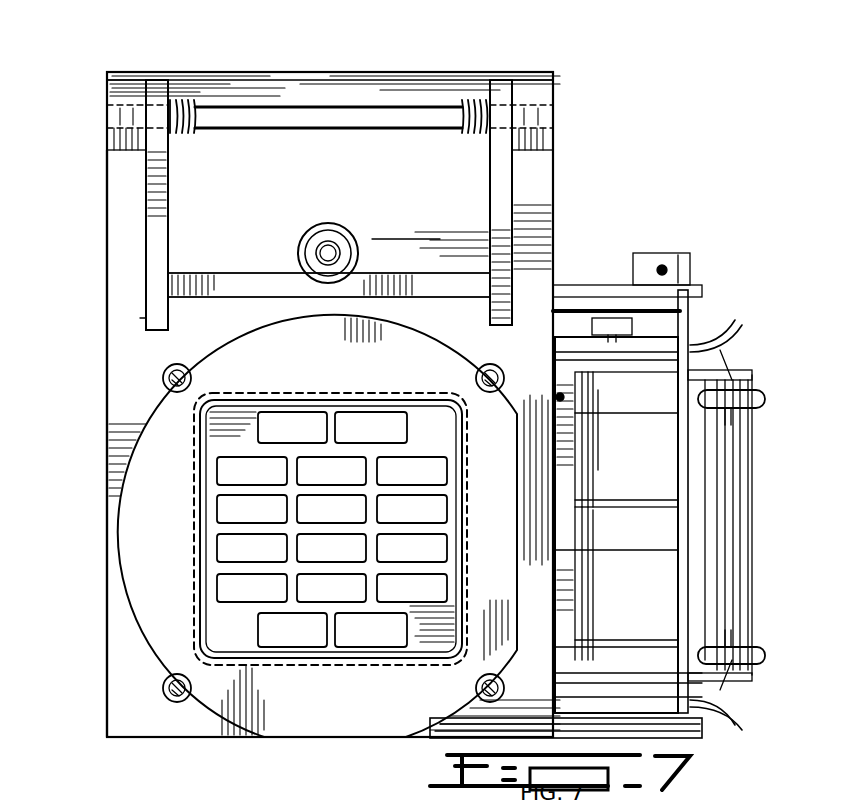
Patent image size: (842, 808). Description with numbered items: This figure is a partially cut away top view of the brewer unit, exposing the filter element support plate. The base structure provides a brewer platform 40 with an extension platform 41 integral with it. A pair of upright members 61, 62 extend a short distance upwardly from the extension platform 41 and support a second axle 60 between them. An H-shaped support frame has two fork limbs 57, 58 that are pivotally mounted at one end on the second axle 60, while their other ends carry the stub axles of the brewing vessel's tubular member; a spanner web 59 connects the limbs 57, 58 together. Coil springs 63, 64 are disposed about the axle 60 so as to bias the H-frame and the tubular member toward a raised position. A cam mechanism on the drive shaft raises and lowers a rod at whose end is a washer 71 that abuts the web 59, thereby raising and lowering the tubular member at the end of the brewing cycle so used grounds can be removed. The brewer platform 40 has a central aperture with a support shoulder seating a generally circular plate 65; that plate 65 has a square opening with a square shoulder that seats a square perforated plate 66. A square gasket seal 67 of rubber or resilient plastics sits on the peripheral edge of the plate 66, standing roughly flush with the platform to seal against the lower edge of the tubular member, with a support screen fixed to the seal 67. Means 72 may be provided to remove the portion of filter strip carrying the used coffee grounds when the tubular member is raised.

The brewer platform 40 is at (110, 488).
The extension platform 41 is at (107, 175).
The fork limb 57 is at (148, 318).
The fork limb 58 is at (540, 280).
The spanner web 59 is at (407, 297).
The second axle 60 is at (397, 107).
The upright member 61 is at (110, 95).
The upright member 62 is at (553, 98).
The coil spring 63 is at (183, 100).
The coil spring 64 is at (482, 100).
The plate 65 is at (148, 580).
The perforated plate 66 is at (228, 632).
The gasket seal 67 is at (357, 658).
The washer 71 is at (320, 228).
The filter strip removal means 72 is at (743, 560).